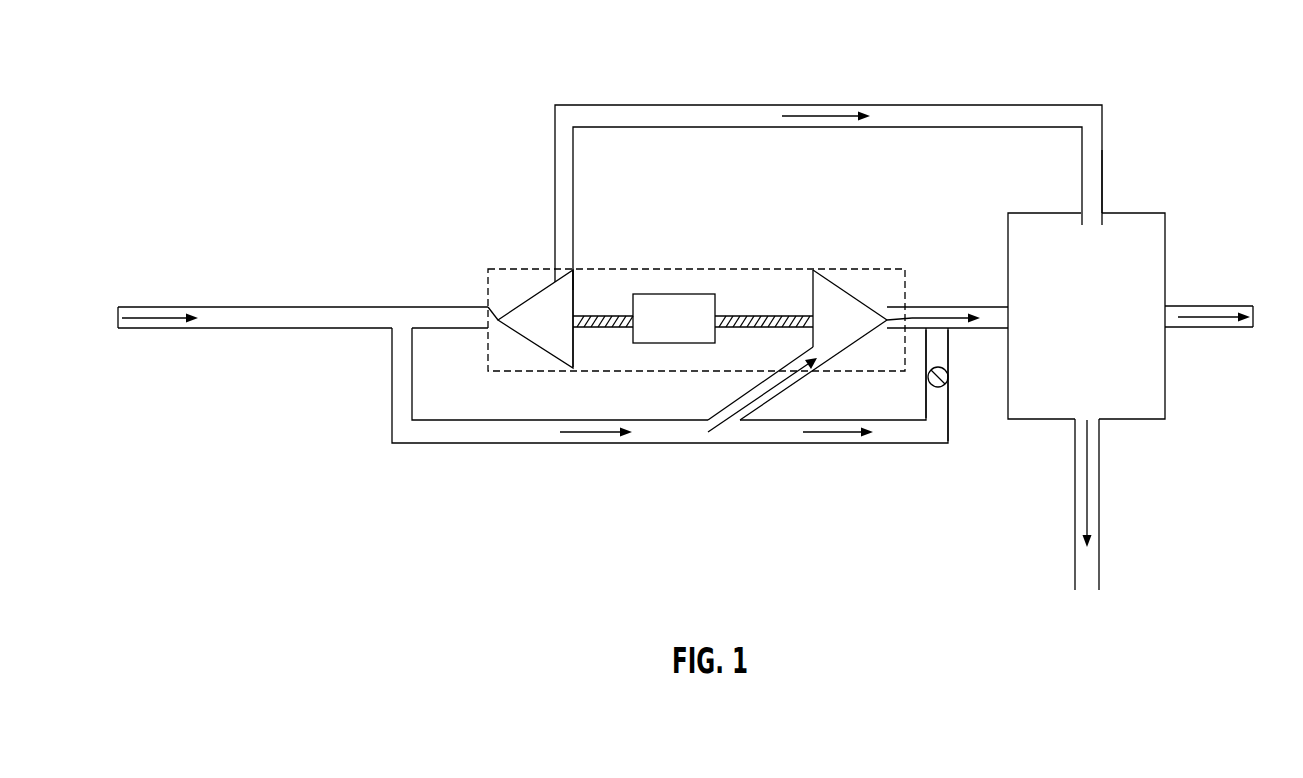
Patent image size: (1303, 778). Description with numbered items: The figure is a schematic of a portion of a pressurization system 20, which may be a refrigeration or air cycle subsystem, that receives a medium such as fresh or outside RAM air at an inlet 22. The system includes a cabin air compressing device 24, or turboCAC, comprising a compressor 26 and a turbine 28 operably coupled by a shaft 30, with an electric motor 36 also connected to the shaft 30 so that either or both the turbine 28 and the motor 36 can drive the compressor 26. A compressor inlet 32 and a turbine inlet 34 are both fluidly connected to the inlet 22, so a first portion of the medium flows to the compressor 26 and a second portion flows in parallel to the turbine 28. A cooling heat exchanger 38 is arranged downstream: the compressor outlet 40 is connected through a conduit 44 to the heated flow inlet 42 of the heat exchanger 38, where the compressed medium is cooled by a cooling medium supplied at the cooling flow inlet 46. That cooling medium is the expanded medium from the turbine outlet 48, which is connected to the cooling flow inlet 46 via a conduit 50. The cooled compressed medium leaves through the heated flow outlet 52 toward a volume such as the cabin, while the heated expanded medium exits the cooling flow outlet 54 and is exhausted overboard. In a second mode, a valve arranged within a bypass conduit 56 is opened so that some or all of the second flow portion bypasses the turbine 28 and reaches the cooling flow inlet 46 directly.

The pressurization system 20 is at (266, 42).
The inlet 22 is at (143, 319).
The cabin air compressing device 24 is at (507, 372).
The compressor 26 is at (540, 290).
The turbine 28 is at (838, 297).
The shaft 30 is at (733, 308).
The compressor inlet 32 is at (488, 292).
The turbine inlet 34 is at (827, 353).
The electric motor 36 is at (673, 293).
The cooling heat exchanger 38 is at (1112, 208).
The compressor outlet 40 is at (579, 283).
The heated flow inlet 42 is at (1101, 177).
The conduit 44 is at (754, 115).
The cooling flow inlet 46 is at (998, 321).
The turbine outlet 48 is at (904, 288).
The conduit 50 is at (985, 305).
The heated flow outlet 52 is at (1090, 467).
The cooling flow outlet 54 is at (1215, 322).
The bypass conduit 56 is at (918, 437).